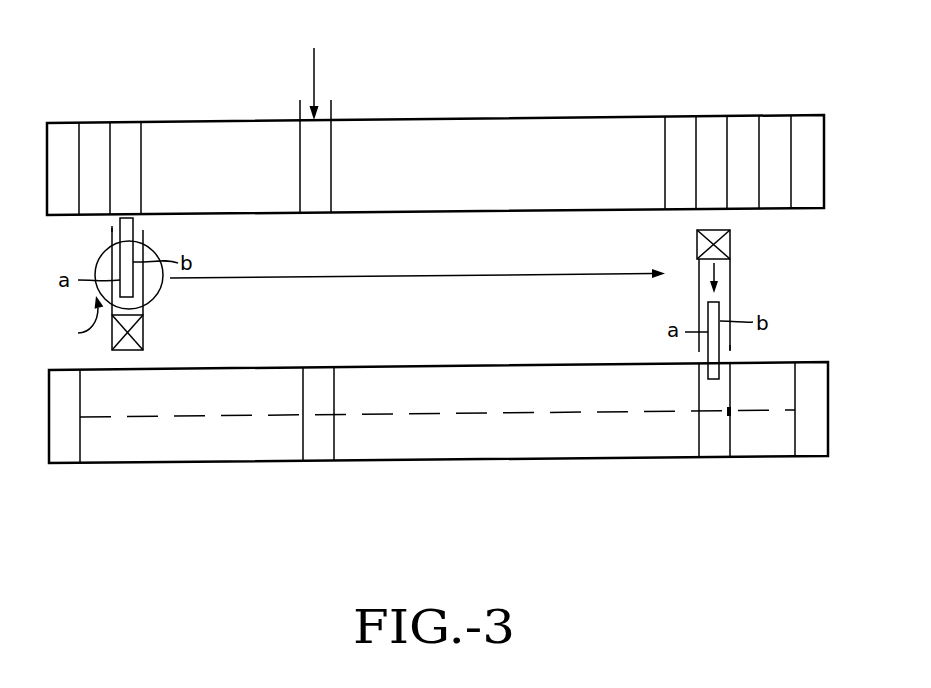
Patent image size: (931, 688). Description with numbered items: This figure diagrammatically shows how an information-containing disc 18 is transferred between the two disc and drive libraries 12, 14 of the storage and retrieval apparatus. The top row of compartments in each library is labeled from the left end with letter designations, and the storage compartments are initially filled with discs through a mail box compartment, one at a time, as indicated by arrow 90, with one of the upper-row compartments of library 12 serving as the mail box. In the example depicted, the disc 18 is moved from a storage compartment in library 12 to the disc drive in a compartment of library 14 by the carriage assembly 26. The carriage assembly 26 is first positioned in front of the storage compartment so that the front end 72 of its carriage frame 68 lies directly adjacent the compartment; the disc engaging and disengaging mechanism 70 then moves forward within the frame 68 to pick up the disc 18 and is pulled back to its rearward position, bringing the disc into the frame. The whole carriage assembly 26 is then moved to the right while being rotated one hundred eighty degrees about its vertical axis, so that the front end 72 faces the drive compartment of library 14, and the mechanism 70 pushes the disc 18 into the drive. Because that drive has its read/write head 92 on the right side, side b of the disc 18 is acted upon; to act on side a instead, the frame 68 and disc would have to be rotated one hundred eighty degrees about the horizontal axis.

The disc and drive library 12 is at (166, 104).
The disc and drive library 14 is at (173, 490).
The information-containing disc 18 is at (140, 228).
The carriage assembly 26 is at (776, 282).
The carriage frame 68 is at (143, 311).
The disc engaging and disengaging mechanism 70 is at (135, 333).
The front end 72 is at (112, 228).
The arrow 90 is at (314, 73).
The read/write head 92 is at (731, 412).